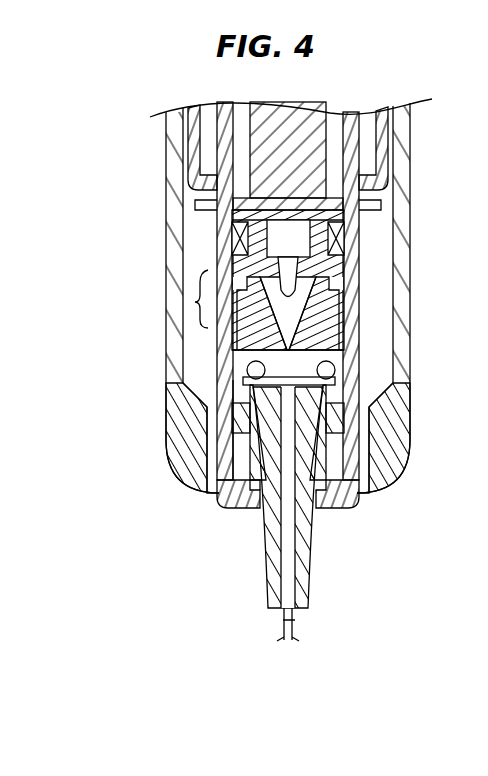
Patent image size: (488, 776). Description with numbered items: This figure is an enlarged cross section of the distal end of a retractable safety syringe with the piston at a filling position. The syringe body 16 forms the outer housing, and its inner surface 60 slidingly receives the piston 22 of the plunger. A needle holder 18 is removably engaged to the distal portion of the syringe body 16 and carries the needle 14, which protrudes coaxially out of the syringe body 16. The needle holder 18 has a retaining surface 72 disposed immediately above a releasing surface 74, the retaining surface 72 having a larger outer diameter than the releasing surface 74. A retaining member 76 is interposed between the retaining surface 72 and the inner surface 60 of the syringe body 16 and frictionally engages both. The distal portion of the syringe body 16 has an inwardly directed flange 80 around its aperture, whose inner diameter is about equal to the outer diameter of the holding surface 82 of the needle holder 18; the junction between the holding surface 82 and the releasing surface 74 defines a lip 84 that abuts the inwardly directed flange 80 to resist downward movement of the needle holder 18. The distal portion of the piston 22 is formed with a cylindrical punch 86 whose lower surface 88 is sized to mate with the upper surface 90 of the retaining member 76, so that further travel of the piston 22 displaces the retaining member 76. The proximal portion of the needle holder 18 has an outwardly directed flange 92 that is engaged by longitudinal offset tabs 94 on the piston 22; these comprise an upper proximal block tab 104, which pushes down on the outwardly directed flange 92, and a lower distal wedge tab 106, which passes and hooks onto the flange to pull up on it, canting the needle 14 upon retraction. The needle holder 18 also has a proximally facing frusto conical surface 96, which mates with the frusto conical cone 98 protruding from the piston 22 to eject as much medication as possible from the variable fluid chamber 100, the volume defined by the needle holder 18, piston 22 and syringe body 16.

The needle 14 is at (293, 620).
The syringe body 16 is at (355, 142).
The needle holder 18 is at (303, 569).
The piston 22 is at (348, 265).
The inner surface of the syringe body 60 is at (350, 382).
The retaining surface 72 is at (220, 476).
The releasing surface 74 is at (383, 467).
The retaining member 76 is at (370, 430).
The inwardly directed flange 80 is at (250, 508).
The holding surface 82 is at (261, 505).
The lip 84 is at (333, 517).
The punch 86 is at (225, 350).
The lower surface of the punch 88 is at (363, 350).
The upper surface of the retaining member 90 is at (373, 412).
The outwardly directed flange 92 is at (350, 360).
The longitudinal offset tabs 94 is at (185, 297).
The proximally facing frusto conical surface 96 is at (220, 375).
The frusto conical cone 98 is at (203, 327).
The variable fluid chamber 100 is at (225, 398).
The upper proximal block tab 104 is at (185, 243).
The lower distal wedge tab 106 is at (346, 292).